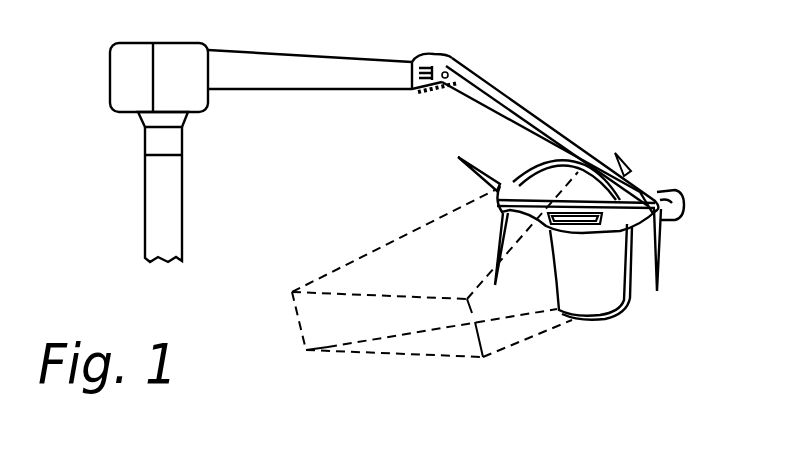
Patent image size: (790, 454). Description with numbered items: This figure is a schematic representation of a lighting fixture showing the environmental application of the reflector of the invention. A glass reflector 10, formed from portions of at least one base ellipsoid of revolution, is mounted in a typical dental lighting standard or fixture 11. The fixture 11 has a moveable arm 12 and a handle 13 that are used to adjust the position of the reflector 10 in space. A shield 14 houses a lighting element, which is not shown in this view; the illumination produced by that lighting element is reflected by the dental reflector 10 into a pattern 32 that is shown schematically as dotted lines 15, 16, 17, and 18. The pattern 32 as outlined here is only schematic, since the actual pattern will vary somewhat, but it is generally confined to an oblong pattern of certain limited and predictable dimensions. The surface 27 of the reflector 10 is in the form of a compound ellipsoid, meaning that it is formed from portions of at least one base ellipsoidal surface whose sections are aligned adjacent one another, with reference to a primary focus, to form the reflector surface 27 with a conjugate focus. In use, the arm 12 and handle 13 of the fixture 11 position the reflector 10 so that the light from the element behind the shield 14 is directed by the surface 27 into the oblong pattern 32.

The glass reflector 10 is at (595, 316).
The dental lighting standard or fixture 11 is at (190, 90).
The moveable arm 12 is at (542, 120).
The handle 13 is at (637, 173).
The shield 14 is at (608, 226).
The dotted line 15 is at (402, 356).
The dotted line 16 is at (298, 323).
The dotted line 17 is at (407, 298).
The dotted line 18 is at (477, 328).
The surface 27 is at (607, 290).
The pattern 32 is at (327, 332).